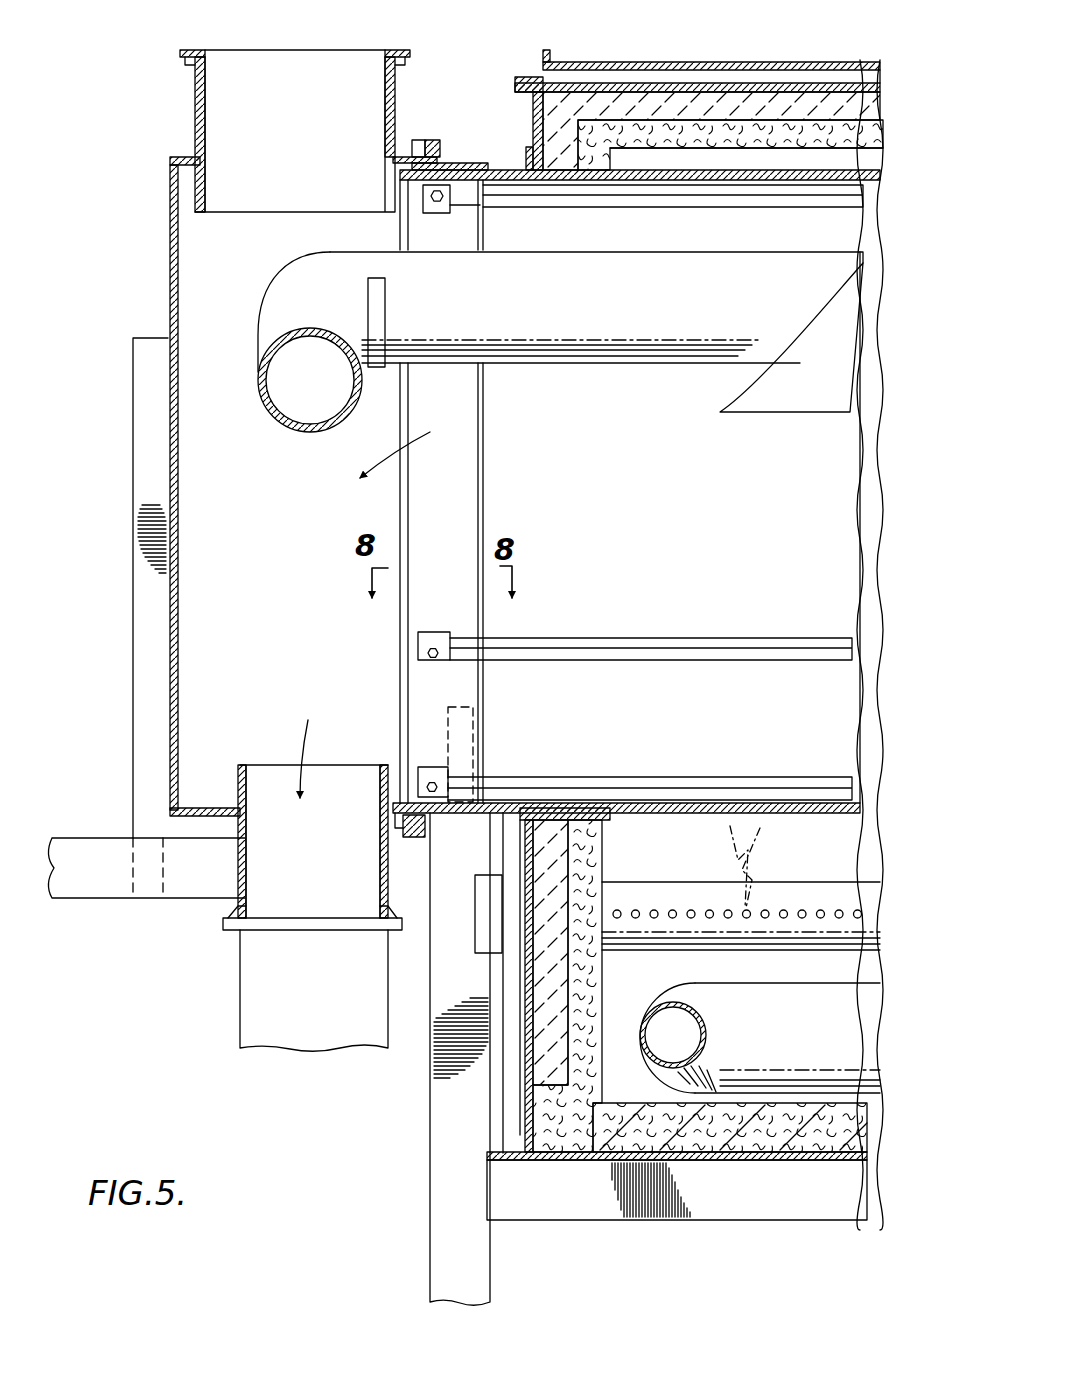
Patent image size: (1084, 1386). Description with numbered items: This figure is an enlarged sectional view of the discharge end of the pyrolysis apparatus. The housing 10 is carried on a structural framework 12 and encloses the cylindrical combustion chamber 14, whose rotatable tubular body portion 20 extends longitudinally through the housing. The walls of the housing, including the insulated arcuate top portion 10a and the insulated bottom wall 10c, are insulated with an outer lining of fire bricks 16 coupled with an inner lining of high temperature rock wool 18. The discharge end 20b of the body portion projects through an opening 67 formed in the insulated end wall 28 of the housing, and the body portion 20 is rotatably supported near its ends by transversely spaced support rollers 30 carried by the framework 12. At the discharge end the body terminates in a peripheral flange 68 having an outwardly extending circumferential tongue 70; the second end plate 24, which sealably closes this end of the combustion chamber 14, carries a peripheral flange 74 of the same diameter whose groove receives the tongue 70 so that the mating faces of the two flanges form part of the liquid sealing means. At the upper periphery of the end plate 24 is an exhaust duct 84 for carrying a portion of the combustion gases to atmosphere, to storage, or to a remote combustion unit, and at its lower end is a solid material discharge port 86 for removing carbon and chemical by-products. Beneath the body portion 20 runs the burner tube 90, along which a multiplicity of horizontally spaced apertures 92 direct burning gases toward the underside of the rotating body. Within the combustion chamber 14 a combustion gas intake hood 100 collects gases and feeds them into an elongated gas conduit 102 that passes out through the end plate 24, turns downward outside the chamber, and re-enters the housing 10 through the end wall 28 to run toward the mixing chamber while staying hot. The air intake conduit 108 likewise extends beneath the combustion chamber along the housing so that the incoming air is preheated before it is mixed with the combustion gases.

The housing 10 is at (757, 76).
The insulated arcuate top portion 10a is at (842, 95).
The insulated bottom wall 10c is at (738, 1145).
The structural framework 12 is at (581, 1223).
The combustion chamber 14 is at (755, 527).
The fire bricks 16 is at (646, 96).
The rock wool 18 is at (688, 128).
The tubular body portion 20 is at (505, 185).
The discharge end 20b is at (462, 222).
The second end plate 24 is at (170, 292).
The second insulated end wall 28 is at (515, 106).
The support rollers 30 is at (475, 722).
The opening 67 is at (566, 176).
The peripheral flange 68 is at (441, 141).
The circumferential tongue 70 is at (427, 140).
The peripheral flange 74 is at (418, 148).
The exhaust duct 84 is at (295, 62).
The solid material discharge port 86 is at (252, 872).
The burner tube 90 is at (802, 886).
The apertures 92 is at (690, 909).
The combustion gas intake hood 100 is at (802, 403).
The gas conduit 102 is at (298, 428).
The air intake conduit 108 is at (812, 1085).